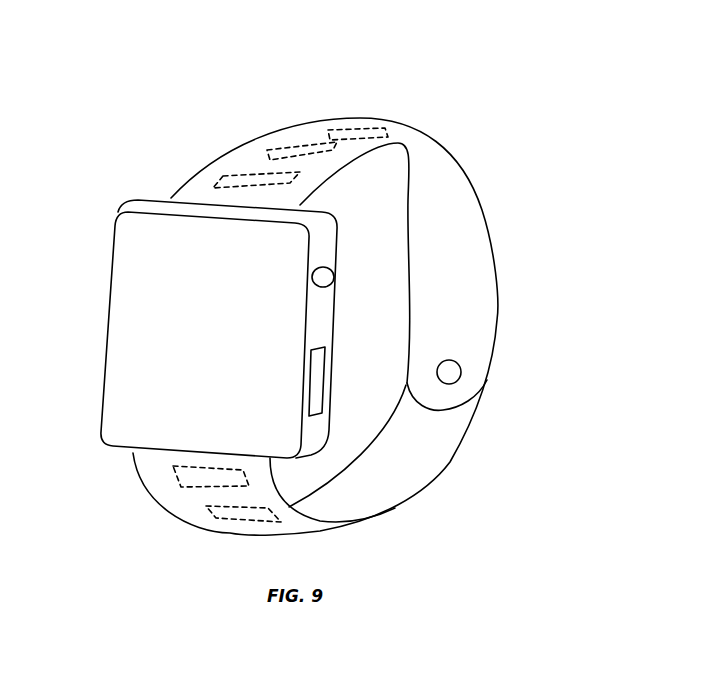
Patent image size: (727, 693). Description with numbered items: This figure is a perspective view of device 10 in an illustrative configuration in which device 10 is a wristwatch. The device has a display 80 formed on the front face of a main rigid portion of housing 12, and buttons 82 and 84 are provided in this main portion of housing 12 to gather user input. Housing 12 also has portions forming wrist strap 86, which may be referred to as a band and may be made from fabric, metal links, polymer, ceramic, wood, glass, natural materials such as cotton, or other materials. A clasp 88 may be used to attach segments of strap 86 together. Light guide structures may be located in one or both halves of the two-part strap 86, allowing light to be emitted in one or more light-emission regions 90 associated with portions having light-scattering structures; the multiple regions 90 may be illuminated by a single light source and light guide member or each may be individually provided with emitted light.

The device 10 is at (494, 81).
The housing 12 is at (143, 200).
The display 80 is at (136, 330).
The button 82 is at (328, 277).
The button 84 is at (319, 357).
The wrist strap 86 is at (473, 262).
The clasp 88 is at (452, 373).
The light-emission region 90 is at (237, 172).